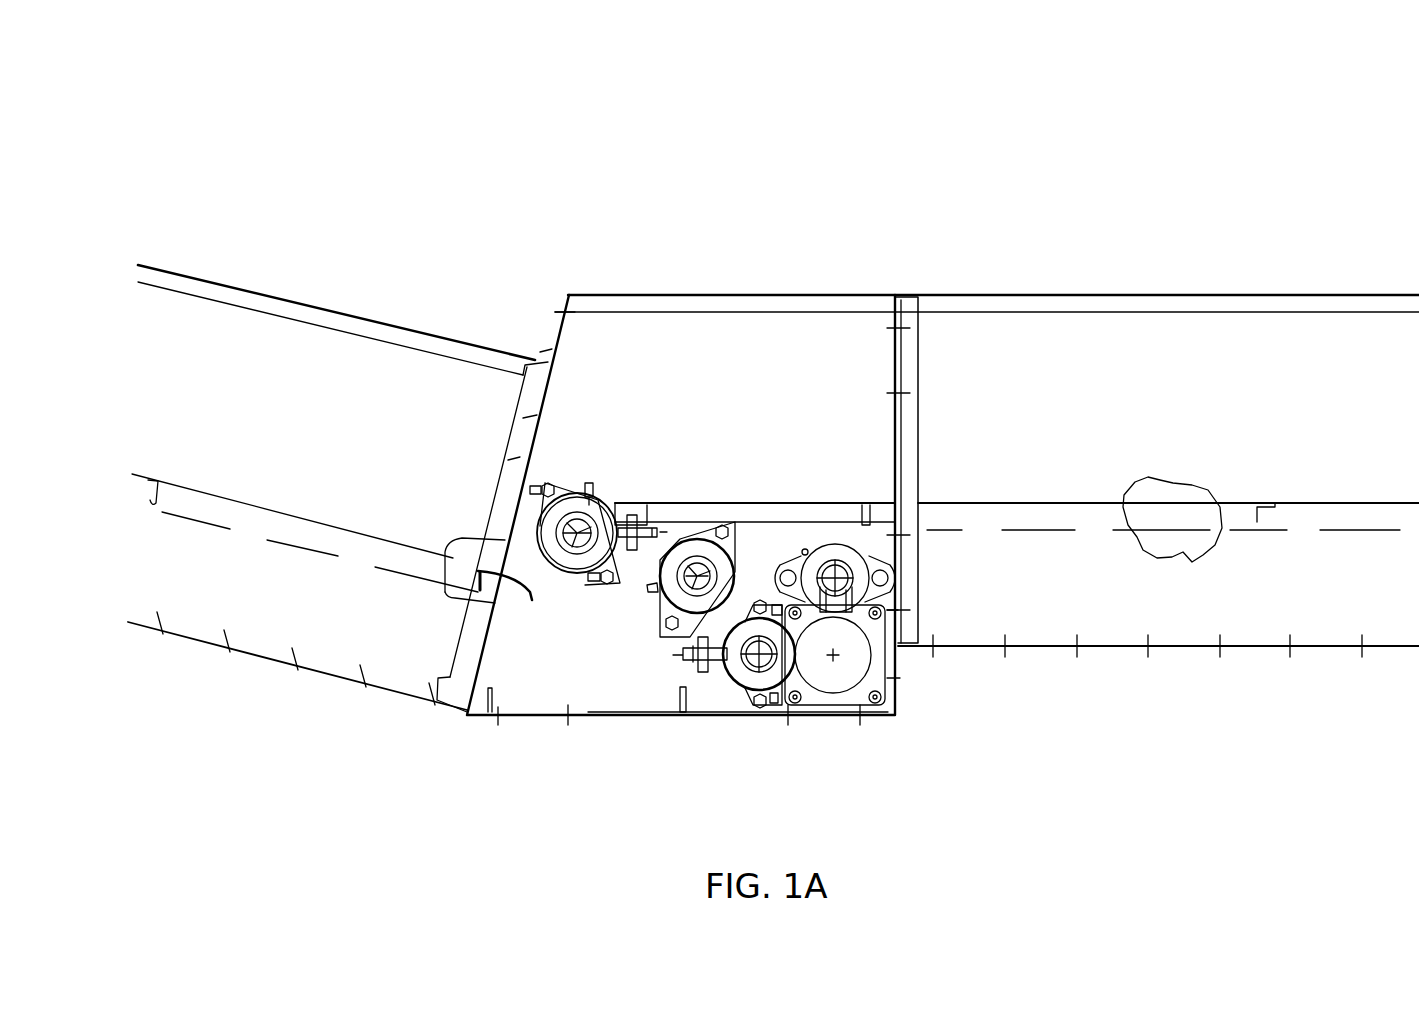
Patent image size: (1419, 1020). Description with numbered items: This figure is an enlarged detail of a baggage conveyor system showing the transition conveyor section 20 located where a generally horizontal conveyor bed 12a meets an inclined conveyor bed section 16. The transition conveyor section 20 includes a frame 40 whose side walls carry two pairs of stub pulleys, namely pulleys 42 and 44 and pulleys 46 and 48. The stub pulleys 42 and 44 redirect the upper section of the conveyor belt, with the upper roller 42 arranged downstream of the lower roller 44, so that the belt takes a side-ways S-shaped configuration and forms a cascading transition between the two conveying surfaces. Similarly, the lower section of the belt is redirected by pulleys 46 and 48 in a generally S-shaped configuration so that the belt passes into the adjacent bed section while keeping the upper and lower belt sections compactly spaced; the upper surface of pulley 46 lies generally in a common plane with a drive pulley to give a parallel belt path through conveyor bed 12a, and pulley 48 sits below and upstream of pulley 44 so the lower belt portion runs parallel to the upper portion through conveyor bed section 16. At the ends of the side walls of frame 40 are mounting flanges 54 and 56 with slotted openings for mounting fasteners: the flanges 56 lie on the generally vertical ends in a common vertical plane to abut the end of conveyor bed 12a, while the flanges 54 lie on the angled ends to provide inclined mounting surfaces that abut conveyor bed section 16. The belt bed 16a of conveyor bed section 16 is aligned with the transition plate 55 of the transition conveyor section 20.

The conveyor bed 12a is at (1195, 297).
The conveyor bed section 16 is at (313, 302).
The belt bed 16a is at (355, 535).
The transition conveyor section 20 is at (705, 292).
The frame 40 is at (803, 340).
The stub pulley 42 is at (590, 513).
The stub pulley 44 is at (700, 568).
The stub pulley 46 is at (857, 563).
The stub pulley 48 is at (728, 675).
The mounting flange 54 is at (552, 337).
The transition plate 55 is at (530, 593).
The mounting flange 56 is at (899, 356).